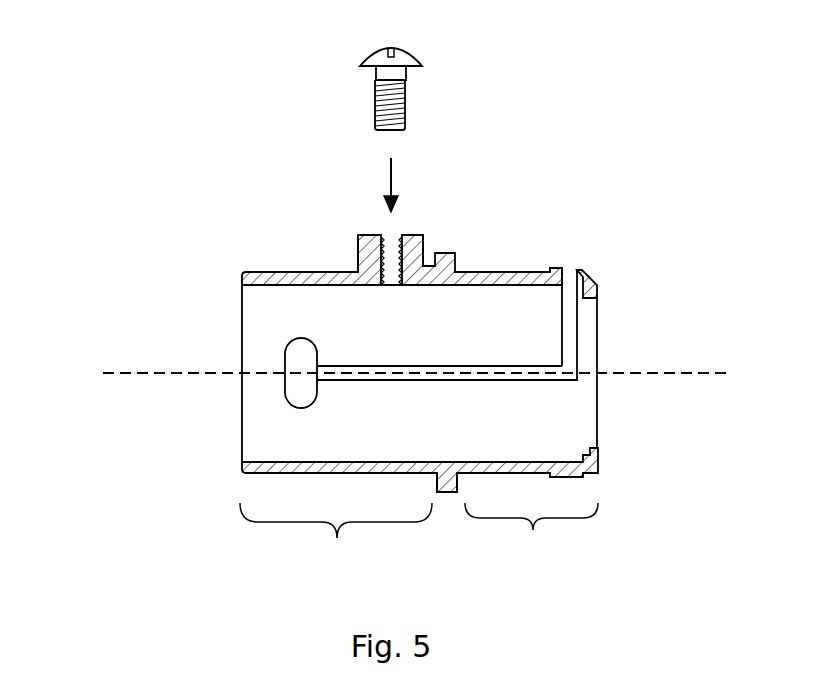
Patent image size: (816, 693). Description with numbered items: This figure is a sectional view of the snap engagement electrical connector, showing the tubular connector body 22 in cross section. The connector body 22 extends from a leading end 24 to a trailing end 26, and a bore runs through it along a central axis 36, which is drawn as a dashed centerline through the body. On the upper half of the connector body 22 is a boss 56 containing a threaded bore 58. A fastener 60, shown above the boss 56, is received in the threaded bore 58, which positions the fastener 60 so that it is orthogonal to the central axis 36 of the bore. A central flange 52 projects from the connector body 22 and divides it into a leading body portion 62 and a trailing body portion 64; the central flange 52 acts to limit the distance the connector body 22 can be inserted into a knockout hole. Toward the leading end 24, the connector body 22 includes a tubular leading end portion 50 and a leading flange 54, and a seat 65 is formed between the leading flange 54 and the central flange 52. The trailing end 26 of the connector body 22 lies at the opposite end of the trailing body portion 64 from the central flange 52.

The connector body 22 is at (166, 315).
The leading end 24 is at (600, 350).
The trailing end 26 is at (242, 388).
The central axis 36 is at (663, 373).
The tubular leading end portion 50 is at (588, 277).
The central flange 52 is at (447, 493).
The leading flange 54 is at (558, 268).
The boss 56 is at (357, 256).
The threaded bore 58 is at (392, 253).
The fastener 60 is at (405, 98).
The leading body portion 62 is at (531, 534).
The trailing body portion 64 is at (336, 538).
The seat 65 is at (503, 272).